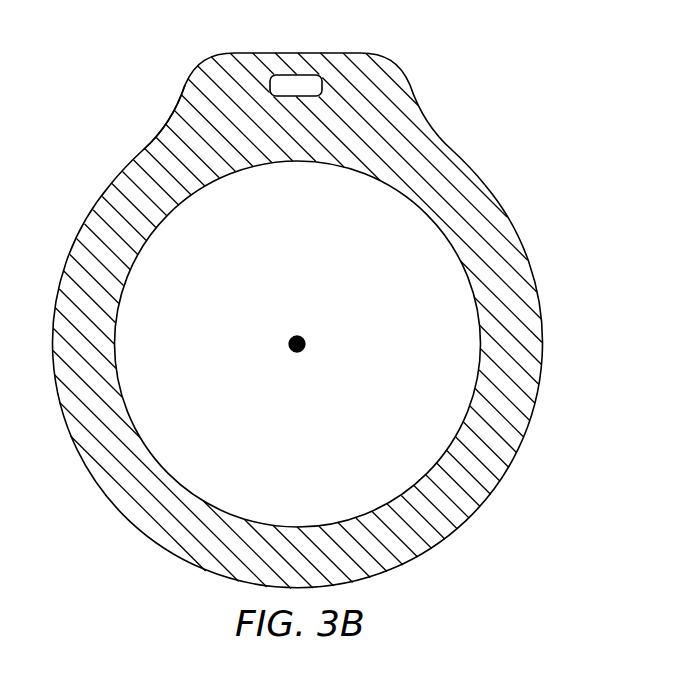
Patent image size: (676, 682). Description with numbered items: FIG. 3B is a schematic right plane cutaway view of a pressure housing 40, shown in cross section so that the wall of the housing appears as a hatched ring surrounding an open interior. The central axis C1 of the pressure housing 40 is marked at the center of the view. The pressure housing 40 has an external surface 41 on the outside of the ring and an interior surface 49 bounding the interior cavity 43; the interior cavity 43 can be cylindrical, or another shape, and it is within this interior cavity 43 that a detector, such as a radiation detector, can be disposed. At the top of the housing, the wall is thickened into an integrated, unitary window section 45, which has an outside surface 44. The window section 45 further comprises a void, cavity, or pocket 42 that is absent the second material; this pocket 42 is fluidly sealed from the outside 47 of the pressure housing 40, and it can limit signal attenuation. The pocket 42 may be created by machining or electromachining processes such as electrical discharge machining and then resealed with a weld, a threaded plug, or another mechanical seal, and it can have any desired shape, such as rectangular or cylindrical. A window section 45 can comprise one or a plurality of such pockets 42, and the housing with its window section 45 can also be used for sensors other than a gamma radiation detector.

The pressure housing 40 is at (327, 303).
The external surface 41 is at (88, 474).
The pocket 42 is at (299, 87).
The interior cavity 43 is at (460, 383).
The outside surface 44 is at (254, 53).
The window section 45 is at (381, 103).
The outside 47 is at (88, 140).
The interior surface 49 is at (330, 163).
The central axis C1 is at (292, 348).